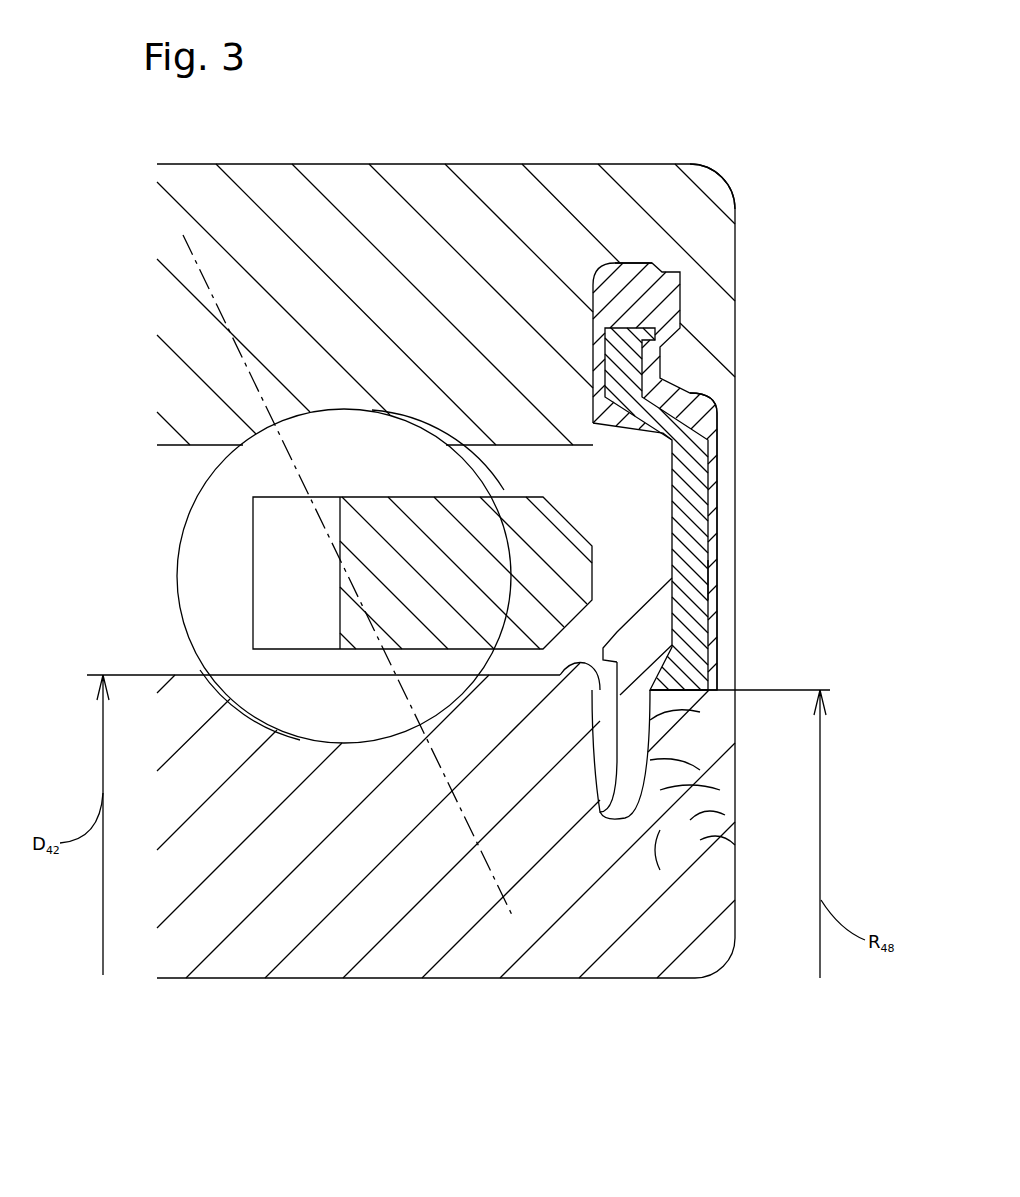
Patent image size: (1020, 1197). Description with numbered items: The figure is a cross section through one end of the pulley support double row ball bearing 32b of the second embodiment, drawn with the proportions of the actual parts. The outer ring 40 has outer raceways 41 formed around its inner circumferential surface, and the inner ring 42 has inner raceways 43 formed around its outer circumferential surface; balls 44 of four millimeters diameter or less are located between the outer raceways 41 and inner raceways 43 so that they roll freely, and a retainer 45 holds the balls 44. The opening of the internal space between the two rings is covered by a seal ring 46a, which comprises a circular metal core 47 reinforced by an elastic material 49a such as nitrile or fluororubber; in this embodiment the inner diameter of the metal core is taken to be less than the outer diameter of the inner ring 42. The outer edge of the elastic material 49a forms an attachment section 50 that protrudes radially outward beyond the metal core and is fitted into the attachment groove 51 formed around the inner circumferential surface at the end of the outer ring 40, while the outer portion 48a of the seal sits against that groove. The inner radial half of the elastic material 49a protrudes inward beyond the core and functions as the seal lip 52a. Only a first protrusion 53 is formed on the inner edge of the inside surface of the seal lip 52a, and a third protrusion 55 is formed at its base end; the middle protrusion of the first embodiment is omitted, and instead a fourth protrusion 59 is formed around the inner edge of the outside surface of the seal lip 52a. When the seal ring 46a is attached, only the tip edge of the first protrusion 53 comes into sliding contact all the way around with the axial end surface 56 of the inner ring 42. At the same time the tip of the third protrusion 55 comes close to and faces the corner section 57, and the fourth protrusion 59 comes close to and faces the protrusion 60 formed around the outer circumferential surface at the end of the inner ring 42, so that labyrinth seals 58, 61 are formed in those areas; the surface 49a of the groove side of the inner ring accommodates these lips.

The double row ball bearing 32b is at (543, 152).
The outer ring 40 is at (430, 245).
The outer raceway 41 is at (345, 420).
The inner ring 42 is at (455, 915).
The inner raceway 43 is at (358, 715).
The ball 44 is at (190, 573).
The retainer 45 is at (573, 535).
The seal ring 46a is at (680, 565).
The metal core 47 is at (615, 503).
The seal outer portion 48a is at (703, 400).
The elastic material 49a is at (643, 740).
The attachment section 50 is at (664, 313).
The attachment groove 51 is at (622, 262).
The seal lip 52a is at (660, 758).
The first protrusion 53 is at (597, 812).
The third protrusion 55 is at (617, 640).
The end surface 56 is at (690, 785).
The corner section 57 is at (600, 715).
The labyrinth seal 58 is at (575, 683).
The fourth protrusion 59 is at (660, 830).
The protrusion 60 is at (710, 835).
The labyrinth seal 61 is at (695, 808).